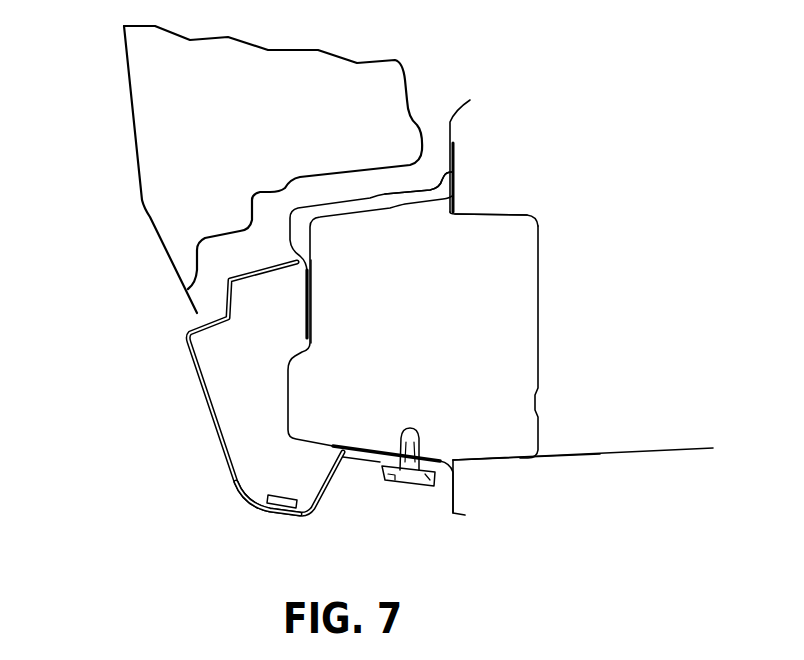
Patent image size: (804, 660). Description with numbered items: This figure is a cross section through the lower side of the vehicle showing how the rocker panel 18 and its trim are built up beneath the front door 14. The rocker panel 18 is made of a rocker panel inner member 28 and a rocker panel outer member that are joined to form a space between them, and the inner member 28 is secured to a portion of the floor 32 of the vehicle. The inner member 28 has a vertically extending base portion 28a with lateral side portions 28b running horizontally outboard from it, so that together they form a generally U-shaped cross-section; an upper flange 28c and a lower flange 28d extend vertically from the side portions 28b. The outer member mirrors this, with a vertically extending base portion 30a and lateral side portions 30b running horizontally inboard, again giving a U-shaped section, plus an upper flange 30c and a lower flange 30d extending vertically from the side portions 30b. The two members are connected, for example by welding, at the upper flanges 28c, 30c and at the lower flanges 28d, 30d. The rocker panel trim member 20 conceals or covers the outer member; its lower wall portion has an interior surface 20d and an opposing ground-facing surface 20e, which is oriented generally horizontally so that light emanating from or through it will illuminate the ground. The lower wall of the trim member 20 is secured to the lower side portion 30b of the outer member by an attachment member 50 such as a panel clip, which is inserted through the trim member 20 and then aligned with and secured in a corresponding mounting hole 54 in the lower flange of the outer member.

The front door 14 is at (133, 115).
The rocker panel 18 is at (556, 222).
The rocker panel trim member 20 is at (203, 400).
The interior surface 20d is at (258, 489).
The ground-facing surface 20e is at (262, 508).
The rocker panel inner member 28 is at (538, 350).
The base portion 28a is at (538, 285).
The lateral side portions 28b is at (495, 214).
The upper flange 28c is at (453, 163).
The lower flange 28d is at (455, 489).
The base portion 30a is at (312, 318).
The lateral side portions 30b is at (417, 203).
The upper flange 30c is at (470, 100).
The lower flange 30d is at (453, 492).
The floor 32 is at (713, 448).
The attachment member 50 is at (370, 467).
The mounting holes 54 is at (438, 447).